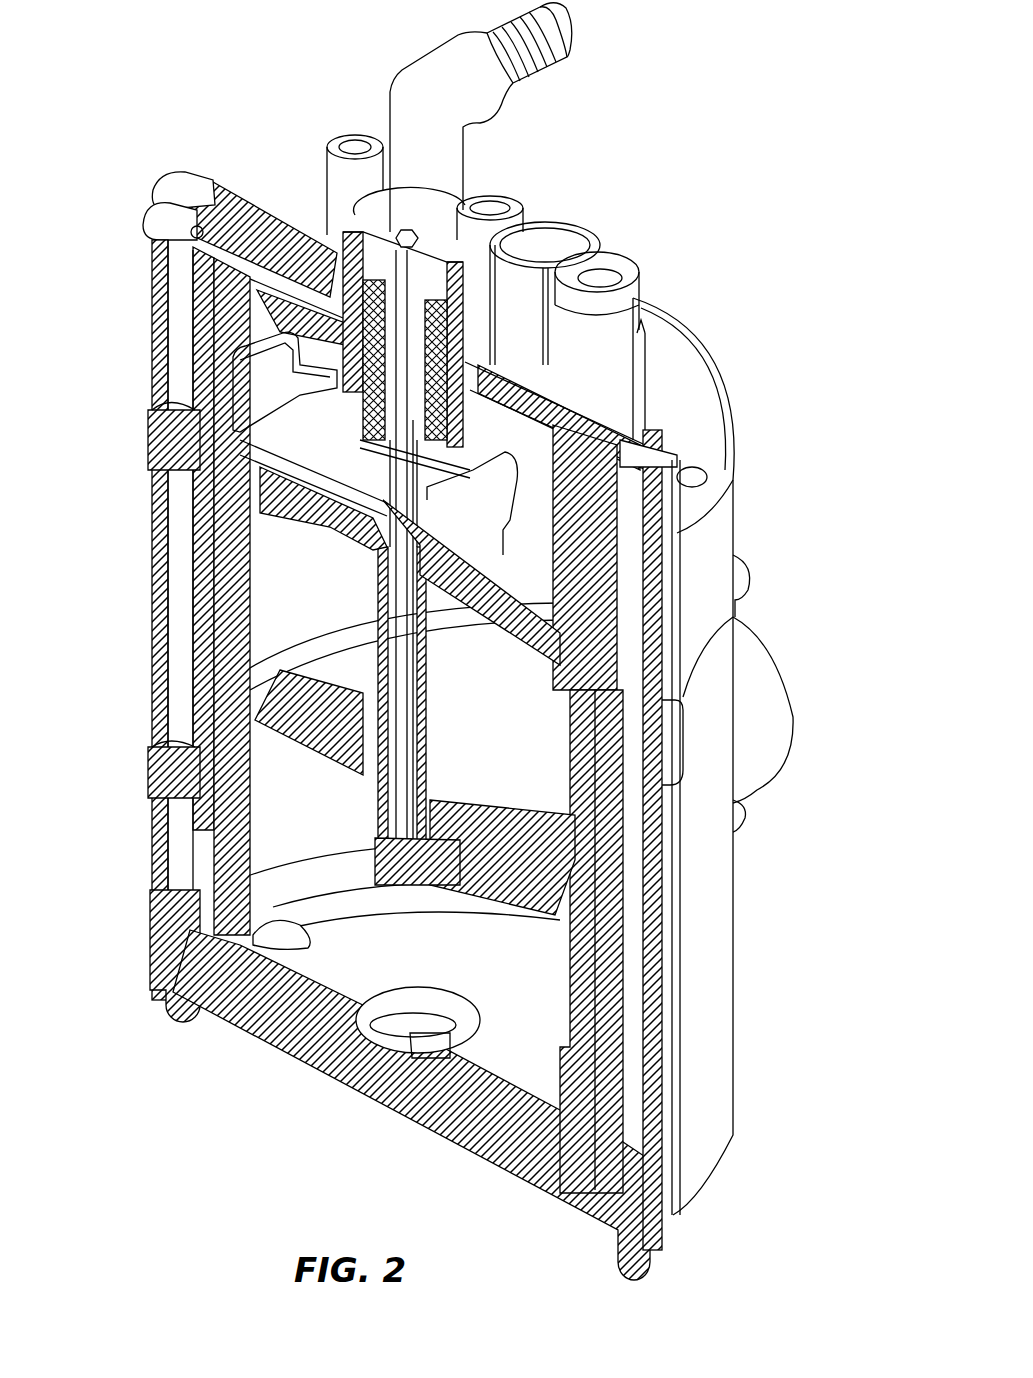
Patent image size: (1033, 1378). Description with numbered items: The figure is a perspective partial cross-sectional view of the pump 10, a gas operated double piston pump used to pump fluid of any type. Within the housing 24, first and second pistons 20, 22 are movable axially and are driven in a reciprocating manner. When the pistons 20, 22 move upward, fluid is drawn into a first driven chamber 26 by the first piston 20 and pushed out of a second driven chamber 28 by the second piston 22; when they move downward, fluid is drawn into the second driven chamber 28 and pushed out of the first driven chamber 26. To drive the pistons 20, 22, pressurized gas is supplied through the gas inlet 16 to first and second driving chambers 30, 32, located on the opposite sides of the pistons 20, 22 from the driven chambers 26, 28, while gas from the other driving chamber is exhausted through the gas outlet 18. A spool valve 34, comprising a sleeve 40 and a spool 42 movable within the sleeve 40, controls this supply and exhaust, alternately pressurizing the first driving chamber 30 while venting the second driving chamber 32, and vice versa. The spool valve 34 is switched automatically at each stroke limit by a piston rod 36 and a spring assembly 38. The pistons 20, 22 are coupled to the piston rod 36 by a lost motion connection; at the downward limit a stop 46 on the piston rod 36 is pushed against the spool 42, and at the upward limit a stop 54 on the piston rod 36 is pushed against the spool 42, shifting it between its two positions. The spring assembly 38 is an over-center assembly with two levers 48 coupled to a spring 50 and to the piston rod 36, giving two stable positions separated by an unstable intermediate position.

The pump 10 is at (686, 121).
The gas inlet 16 is at (400, 100).
The gas outlet 18 is at (562, 252).
The first piston 20 is at (648, 590).
The second piston 22 is at (503, 897).
The housing 24 is at (623, 900).
The first driven chamber 26 is at (250, 577).
The second driven chamber 28 is at (250, 718).
The first driving chamber 30 is at (253, 477).
The second driving chamber 32 is at (343, 967).
The spool valve 34 is at (550, 253).
The piston rod 36 is at (397, 597).
The spring assembly 38 is at (538, 444).
The sleeve 40 is at (330, 255).
The spool 42 is at (343, 263).
The stop 46 is at (403, 233).
The levers 48 is at (433, 522).
The spring 50 is at (232, 393).
The stop 54 is at (380, 413).